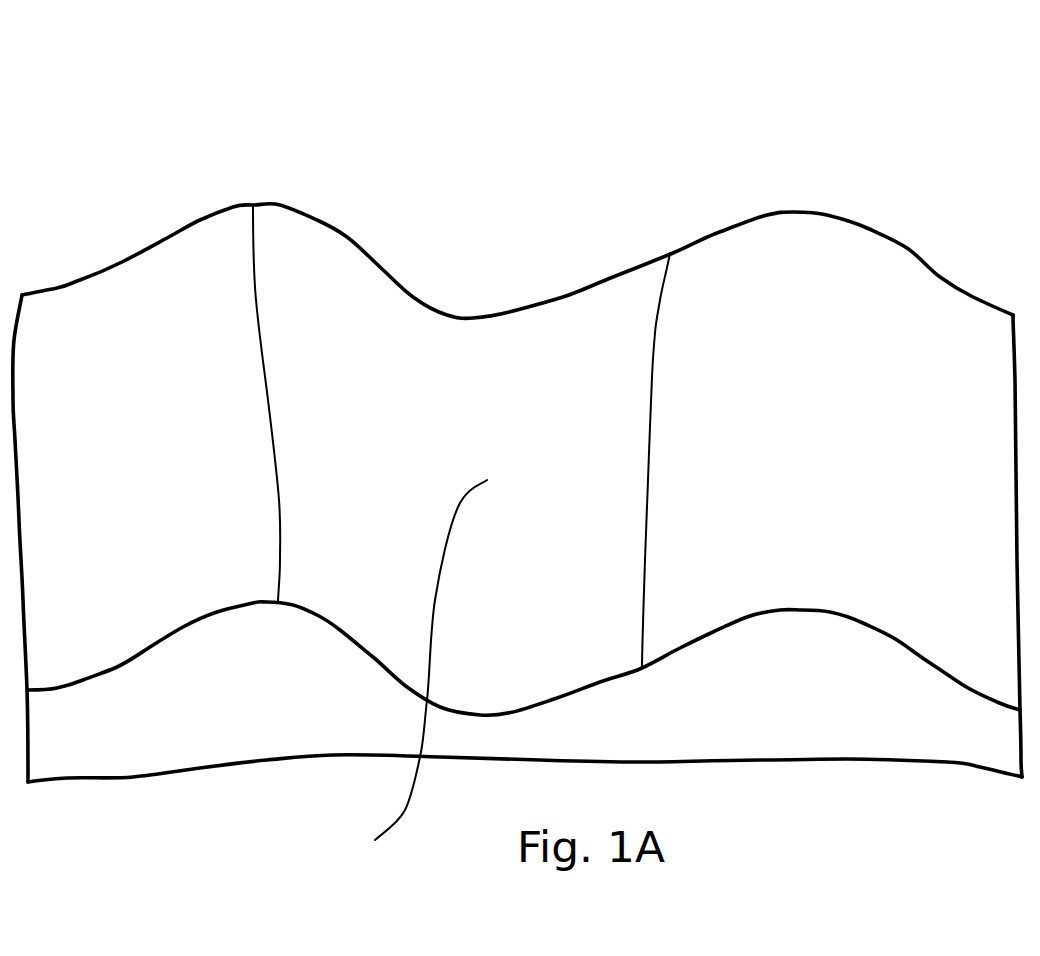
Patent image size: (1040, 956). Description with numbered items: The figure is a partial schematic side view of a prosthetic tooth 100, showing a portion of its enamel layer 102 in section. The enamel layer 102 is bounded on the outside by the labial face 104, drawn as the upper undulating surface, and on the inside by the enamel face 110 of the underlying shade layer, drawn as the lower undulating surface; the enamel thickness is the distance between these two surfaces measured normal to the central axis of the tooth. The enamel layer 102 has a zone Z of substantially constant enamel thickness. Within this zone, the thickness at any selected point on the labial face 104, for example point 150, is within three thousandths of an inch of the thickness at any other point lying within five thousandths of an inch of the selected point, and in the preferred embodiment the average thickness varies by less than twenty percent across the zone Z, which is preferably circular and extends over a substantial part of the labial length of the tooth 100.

The prosthetic tooth 100 is at (122, 262).
The enamel layer 102 is at (835, 257).
The labial face 104 is at (347, 237).
The enamel face 110 is at (670, 253).
The point 150 is at (253, 205).
The zone of substantially constant enamel thickness Z is at (417, 670).